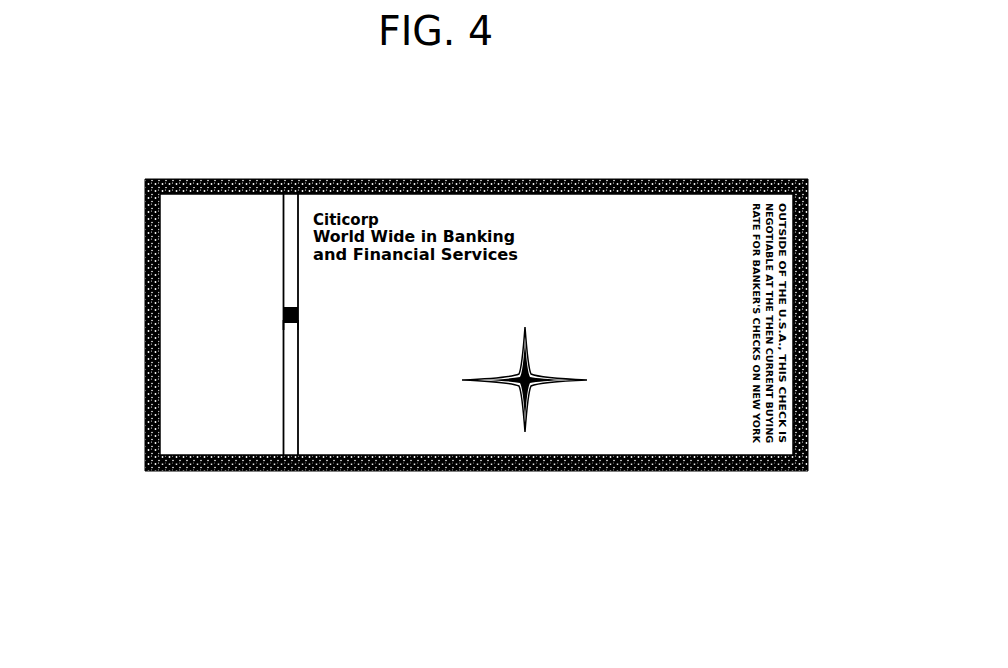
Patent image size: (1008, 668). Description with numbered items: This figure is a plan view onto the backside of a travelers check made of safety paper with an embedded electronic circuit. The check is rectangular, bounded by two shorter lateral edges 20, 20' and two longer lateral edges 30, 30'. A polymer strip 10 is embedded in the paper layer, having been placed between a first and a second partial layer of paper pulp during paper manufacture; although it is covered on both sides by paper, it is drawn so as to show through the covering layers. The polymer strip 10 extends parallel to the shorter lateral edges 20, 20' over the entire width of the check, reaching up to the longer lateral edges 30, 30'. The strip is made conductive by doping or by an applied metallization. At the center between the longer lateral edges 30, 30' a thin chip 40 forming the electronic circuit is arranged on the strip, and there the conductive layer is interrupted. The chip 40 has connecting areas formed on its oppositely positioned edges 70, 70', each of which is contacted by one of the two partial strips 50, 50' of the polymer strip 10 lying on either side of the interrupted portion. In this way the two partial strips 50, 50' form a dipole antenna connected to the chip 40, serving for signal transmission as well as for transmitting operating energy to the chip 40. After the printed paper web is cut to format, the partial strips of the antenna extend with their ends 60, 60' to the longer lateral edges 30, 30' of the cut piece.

The polymer strip 10 is at (278, 366).
The shorter lateral edge 20 is at (523, 325).
The shorter lateral edge 20' is at (427, 324).
The longer lateral edge 30 is at (476, 153).
The longer lateral edge 30' is at (476, 513).
The chip 40 is at (283, 322).
The partial strip 50 is at (237, 224).
The partial strip 50' is at (261, 456).
The end of partial strip 60 is at (315, 224).
The end of partial strip 60' is at (331, 432).
The edge of chip 70 is at (166, 331).
The edge of chip 70' is at (182, 434).